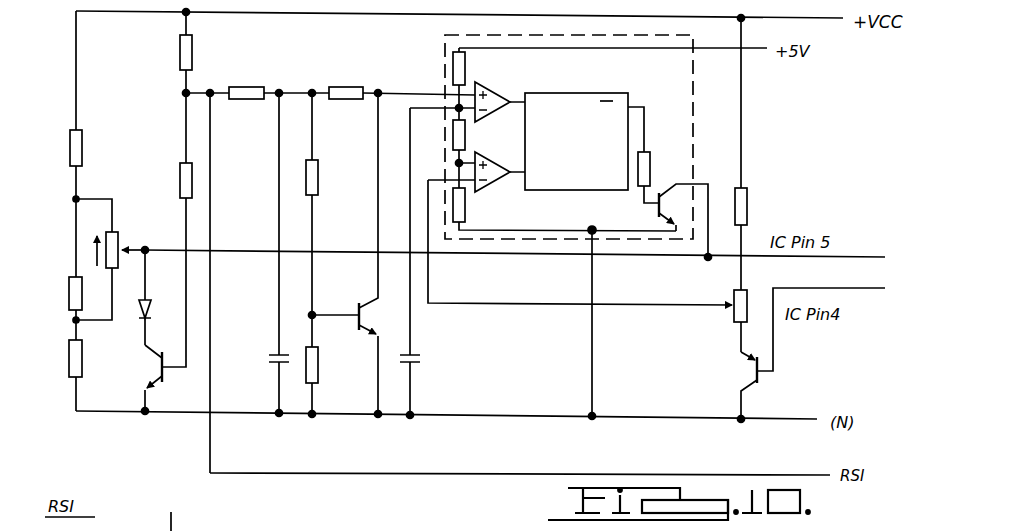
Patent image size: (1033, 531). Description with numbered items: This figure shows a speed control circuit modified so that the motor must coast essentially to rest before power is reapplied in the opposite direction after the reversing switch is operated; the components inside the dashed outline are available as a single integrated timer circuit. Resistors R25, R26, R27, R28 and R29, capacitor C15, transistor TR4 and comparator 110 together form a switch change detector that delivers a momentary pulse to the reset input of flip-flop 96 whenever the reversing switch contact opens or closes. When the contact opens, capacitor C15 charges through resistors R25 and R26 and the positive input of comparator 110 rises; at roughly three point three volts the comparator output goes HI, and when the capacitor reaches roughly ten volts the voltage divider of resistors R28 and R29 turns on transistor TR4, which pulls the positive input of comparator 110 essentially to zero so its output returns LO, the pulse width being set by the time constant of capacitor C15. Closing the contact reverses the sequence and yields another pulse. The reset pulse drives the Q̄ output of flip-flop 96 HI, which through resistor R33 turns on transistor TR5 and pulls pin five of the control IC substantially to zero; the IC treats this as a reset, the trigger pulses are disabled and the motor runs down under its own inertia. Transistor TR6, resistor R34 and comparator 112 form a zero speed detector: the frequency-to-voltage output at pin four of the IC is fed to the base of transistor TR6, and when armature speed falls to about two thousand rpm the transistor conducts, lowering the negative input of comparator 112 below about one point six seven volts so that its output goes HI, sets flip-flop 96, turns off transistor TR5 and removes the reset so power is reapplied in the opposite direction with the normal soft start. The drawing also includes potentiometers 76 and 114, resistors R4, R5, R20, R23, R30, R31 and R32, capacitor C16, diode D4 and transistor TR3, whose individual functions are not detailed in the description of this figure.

The potentiometer (speed setting) 76 is at (111, 259).
The flip-flop 96 is at (590, 93).
The comparator 110 is at (489, 91).
The comparator 112 is at (500, 181).
The potentiometer 114 is at (733, 318).
The resistor R4 is at (56, 148).
The resistor R5 is at (52, 358).
The resistor R20 is at (49, 293).
The resistor R23 is at (166, 145).
The resistor R25 is at (205, 53).
The resistor R26 is at (246, 82).
The resistor R27 is at (345, 82).
The resistor R28 is at (330, 204).
The resistor R29 is at (329, 365).
The resistor R30 is at (478, 78).
The resistor R31 is at (477, 136).
The resistor R32 is at (564, 198).
The resistor R33 is at (655, 155).
The resistor R34 is at (761, 154).
The capacitor C15 is at (258, 255).
The capacitor C16 is at (429, 263).
The diode D4 is at (156, 297).
The transistor TR3 is at (147, 306).
The transistor TR4 is at (347, 255).
The transistor TR5 is at (657, 222).
The transistor TR6 is at (812, 355).